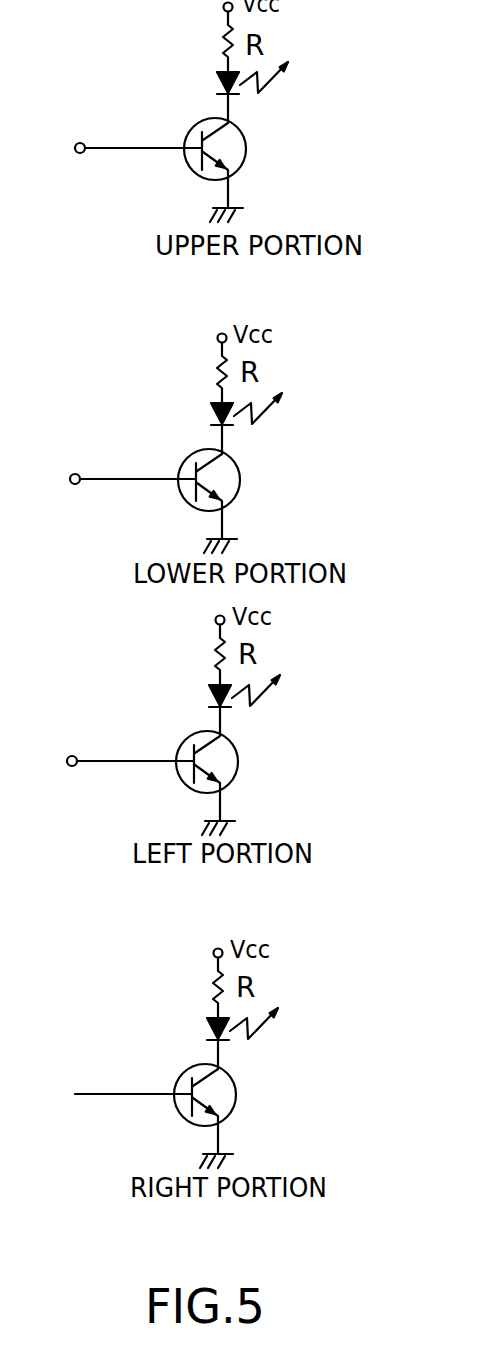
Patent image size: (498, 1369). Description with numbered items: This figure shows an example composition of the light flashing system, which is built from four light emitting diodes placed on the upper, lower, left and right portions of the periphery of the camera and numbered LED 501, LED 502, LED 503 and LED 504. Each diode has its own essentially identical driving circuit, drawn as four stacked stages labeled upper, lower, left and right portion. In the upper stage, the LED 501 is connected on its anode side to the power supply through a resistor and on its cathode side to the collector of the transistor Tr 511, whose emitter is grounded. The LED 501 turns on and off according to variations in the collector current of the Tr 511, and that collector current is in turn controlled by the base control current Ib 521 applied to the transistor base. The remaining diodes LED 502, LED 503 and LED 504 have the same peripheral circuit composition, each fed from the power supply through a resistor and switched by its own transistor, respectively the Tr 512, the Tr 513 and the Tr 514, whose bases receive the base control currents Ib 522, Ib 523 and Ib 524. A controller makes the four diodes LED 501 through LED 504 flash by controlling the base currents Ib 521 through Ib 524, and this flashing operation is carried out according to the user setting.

The LED 501 is at (222, 83).
The LED 502 is at (216, 414).
The LED 503 is at (214, 696).
The LED 504 is at (212, 1029).
The transistor 511 is at (247, 150).
The transistor 512 is at (241, 481).
The transistor 513 is at (239, 763).
The transistor 514 is at (237, 1096).
The base control current 521 is at (118, 149).
The base control current 522 is at (111, 480).
The base control current 523 is at (109, 762).
The base control current 524 is at (106, 1095).